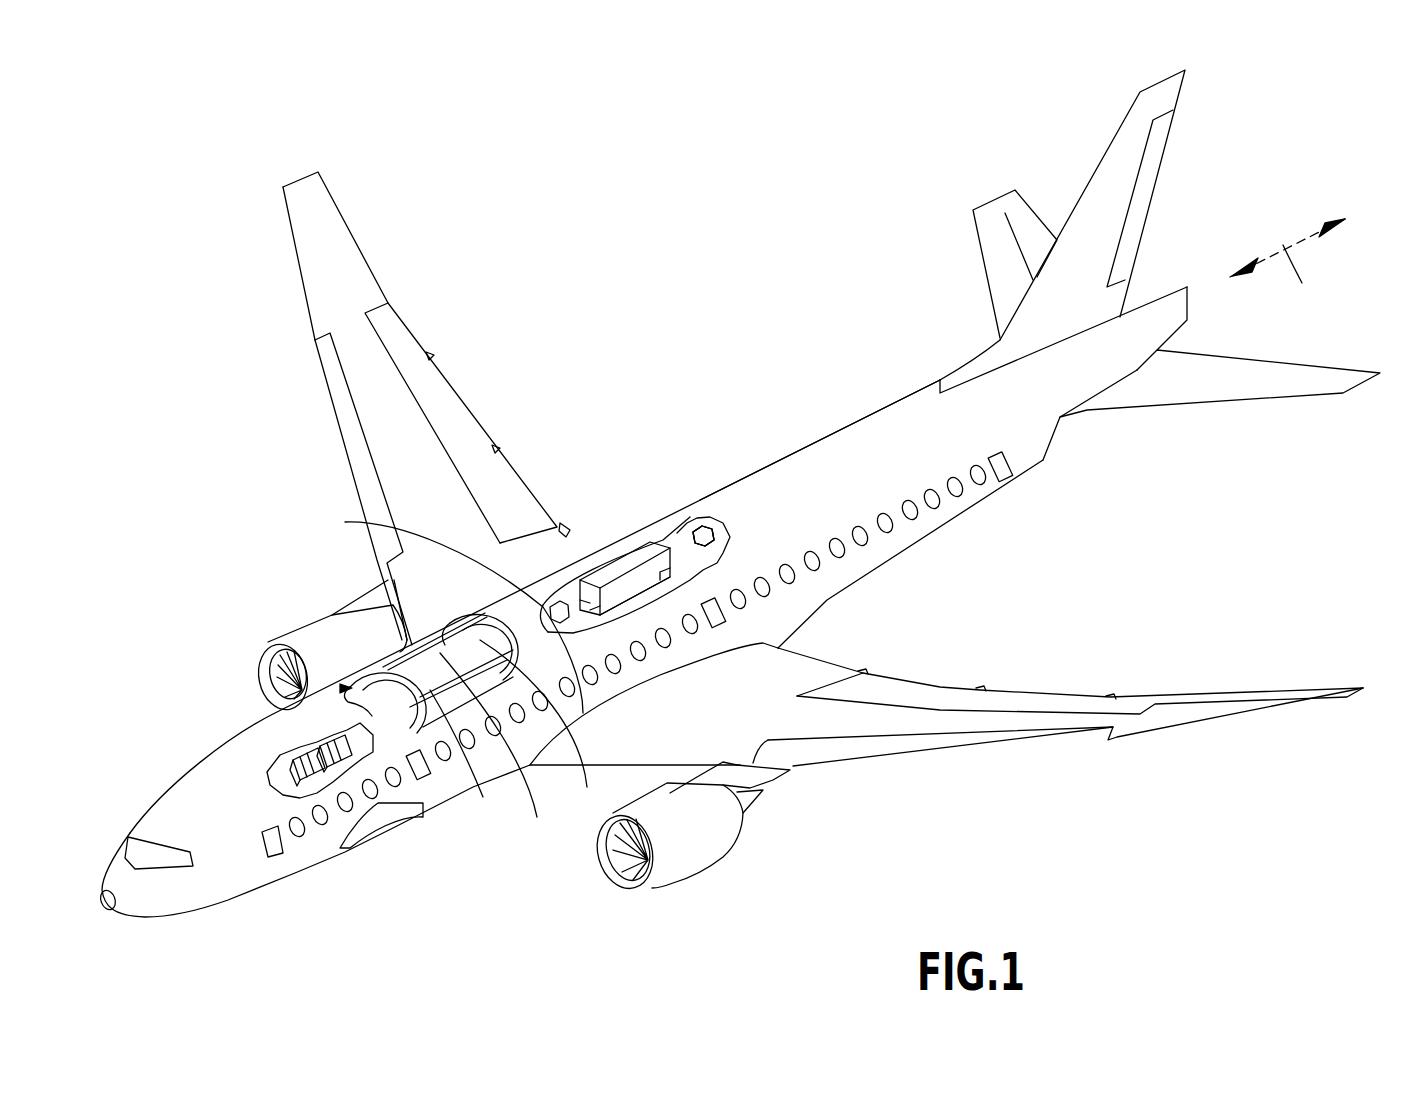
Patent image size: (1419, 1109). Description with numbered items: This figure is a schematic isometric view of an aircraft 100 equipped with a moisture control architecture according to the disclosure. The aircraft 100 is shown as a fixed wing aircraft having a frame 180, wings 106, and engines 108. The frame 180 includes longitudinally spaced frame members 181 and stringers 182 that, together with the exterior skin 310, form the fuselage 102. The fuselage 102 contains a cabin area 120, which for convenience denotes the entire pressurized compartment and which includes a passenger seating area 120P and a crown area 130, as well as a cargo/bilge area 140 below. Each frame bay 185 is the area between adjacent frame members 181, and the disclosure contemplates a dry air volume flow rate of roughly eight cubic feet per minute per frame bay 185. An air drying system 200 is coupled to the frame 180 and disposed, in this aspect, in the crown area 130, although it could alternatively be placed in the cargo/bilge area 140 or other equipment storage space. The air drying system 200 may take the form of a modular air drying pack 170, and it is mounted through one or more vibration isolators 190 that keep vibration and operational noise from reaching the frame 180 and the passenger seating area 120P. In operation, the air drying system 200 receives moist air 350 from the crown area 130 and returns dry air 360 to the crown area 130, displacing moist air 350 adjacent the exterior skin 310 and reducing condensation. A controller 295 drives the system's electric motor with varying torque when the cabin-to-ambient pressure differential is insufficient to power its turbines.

The aircraft 100 is at (948, 158).
The fuselage 102 is at (192, 765).
The wings 106 is at (315, 340).
The engines 108 is at (295, 642).
The cabin area 120 is at (282, 800).
The passenger seating area 120P is at (275, 758).
The crown area 130 is at (682, 525).
The cargo/bilge area 140 is at (378, 812).
The air drying pack 170 is at (660, 537).
The frame 180 is at (277, 712).
The frame members 181 is at (519, 738).
The stringers 182 is at (505, 751).
The frame bay 185 is at (428, 664).
The vibration isolators 190 is at (670, 583).
The air drying system 200 is at (633, 578).
The controller 295 is at (563, 550).
The exterior skin 310 is at (897, 448).
The moist air 350 is at (710, 540).
The dry air 360 is at (345, 522).